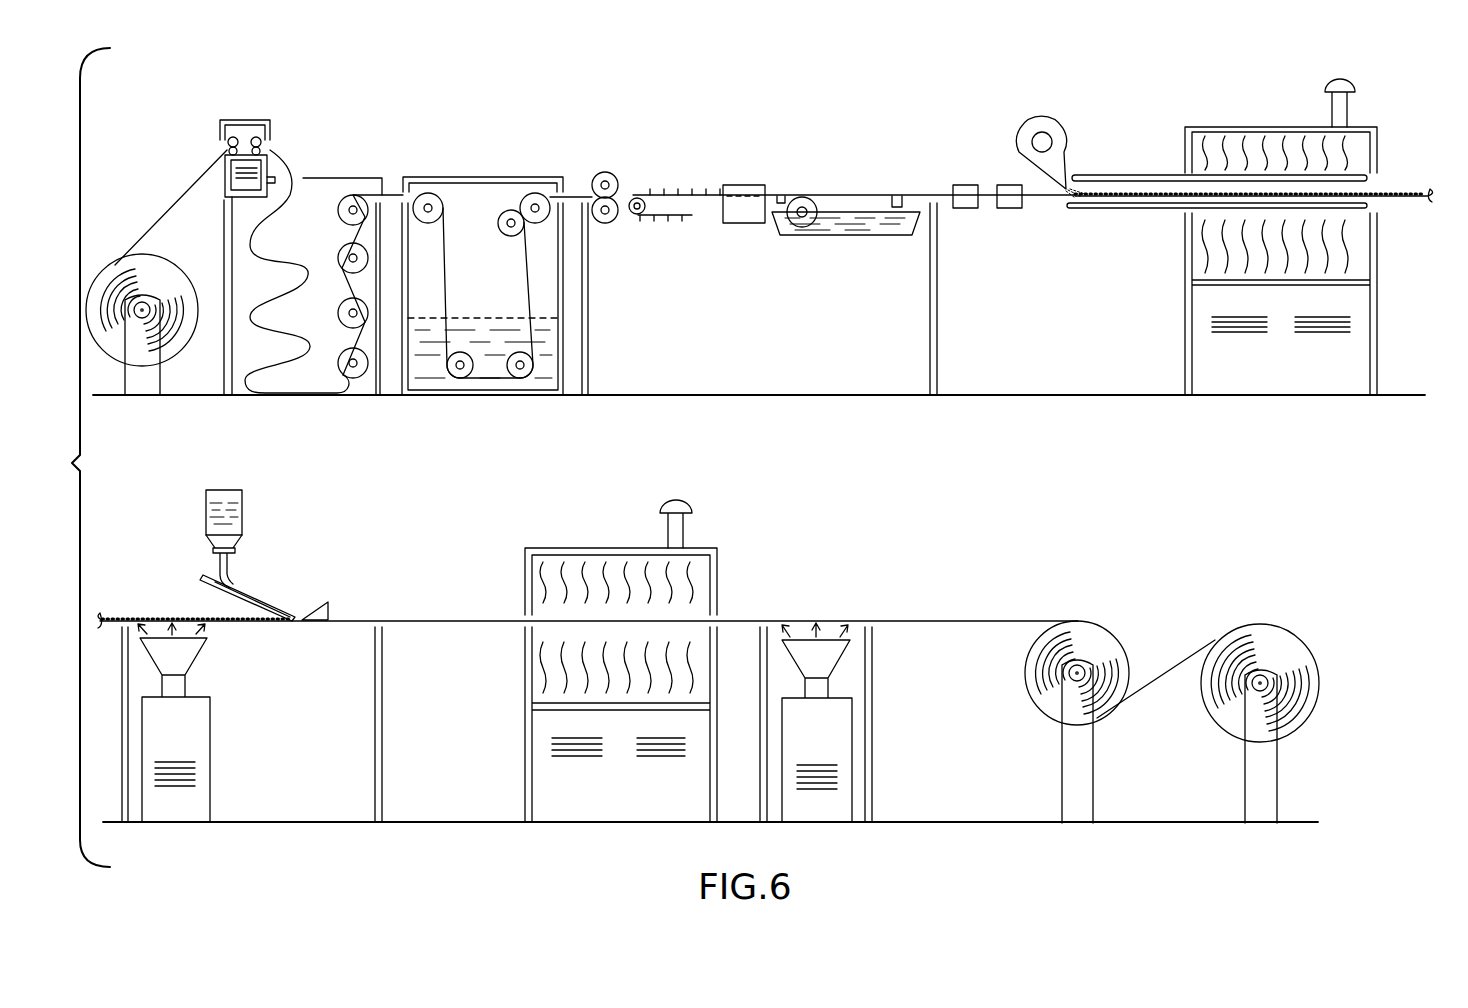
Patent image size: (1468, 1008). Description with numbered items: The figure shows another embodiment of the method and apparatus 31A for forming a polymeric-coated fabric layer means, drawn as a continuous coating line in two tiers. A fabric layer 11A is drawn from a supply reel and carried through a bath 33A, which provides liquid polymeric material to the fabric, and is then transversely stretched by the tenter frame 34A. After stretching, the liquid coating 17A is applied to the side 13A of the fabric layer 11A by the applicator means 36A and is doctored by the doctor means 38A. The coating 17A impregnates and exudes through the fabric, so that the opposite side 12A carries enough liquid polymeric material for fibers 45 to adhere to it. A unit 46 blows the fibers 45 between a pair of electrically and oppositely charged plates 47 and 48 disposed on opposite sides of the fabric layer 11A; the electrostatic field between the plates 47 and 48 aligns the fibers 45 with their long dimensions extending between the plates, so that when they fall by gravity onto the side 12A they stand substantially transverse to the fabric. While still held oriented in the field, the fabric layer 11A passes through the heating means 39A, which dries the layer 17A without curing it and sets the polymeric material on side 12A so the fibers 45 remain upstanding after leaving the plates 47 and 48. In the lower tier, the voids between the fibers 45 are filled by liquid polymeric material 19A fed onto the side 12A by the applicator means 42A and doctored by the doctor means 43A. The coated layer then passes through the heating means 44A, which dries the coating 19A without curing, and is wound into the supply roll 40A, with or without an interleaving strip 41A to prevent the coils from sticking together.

The fabric layer 11A is at (168, 203).
The side of the fabric layer 12A is at (822, 193).
The side of the fabric layer 13A is at (780, 197).
The liquid coating 17A is at (838, 220).
The polymeric material 19A is at (262, 598).
The method and apparatus for forming the layer means 31A is at (850, 133).
The bath 33A is at (502, 327).
The tenter frame 34A is at (675, 217).
The applicator means 36A is at (853, 245).
The doctor means 38A is at (900, 203).
The heating means 39A is at (1283, 118).
The supply roll 40A is at (1082, 633).
The interleaving strip 41A is at (1187, 660).
The applicator means 42A is at (272, 555).
The doctor means 43A is at (328, 602).
The heating means 44A is at (611, 538).
The fibers 45 is at (1082, 187).
The unit 46 is at (1040, 122).
The plate 47 is at (1152, 170).
The plate 48 is at (1132, 210).